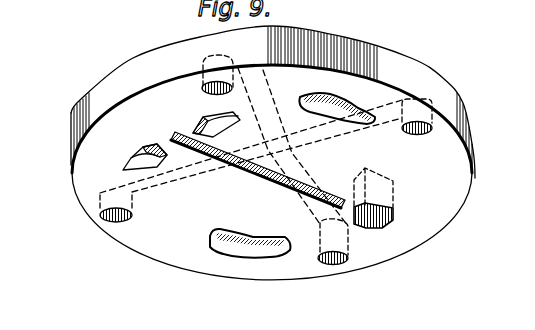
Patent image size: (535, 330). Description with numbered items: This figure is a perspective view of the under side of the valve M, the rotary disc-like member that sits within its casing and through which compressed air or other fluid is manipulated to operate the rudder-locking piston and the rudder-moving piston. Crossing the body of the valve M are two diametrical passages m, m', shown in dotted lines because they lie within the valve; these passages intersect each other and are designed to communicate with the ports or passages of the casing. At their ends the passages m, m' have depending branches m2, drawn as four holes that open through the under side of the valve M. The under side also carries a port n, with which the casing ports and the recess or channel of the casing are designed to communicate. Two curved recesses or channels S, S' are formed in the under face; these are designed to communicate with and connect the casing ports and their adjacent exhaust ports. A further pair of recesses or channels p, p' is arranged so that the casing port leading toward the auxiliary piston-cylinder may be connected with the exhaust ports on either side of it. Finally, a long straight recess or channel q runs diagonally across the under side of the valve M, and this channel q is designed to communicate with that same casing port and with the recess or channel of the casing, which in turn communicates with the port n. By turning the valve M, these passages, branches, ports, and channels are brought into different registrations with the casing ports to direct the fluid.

The valve M is at (486, 110).
The depending branches m2 is at (210, 83).
The diametrical passage m is at (251, 146).
The diametrical passage m' is at (293, 147).
The recess or channel q is at (243, 171).
The recess or channel S is at (349, 69).
The recess or channel S' is at (237, 268).
The recess or channel p is at (188, 124).
The recess or channel p' is at (95, 161).
The port n is at (393, 215).